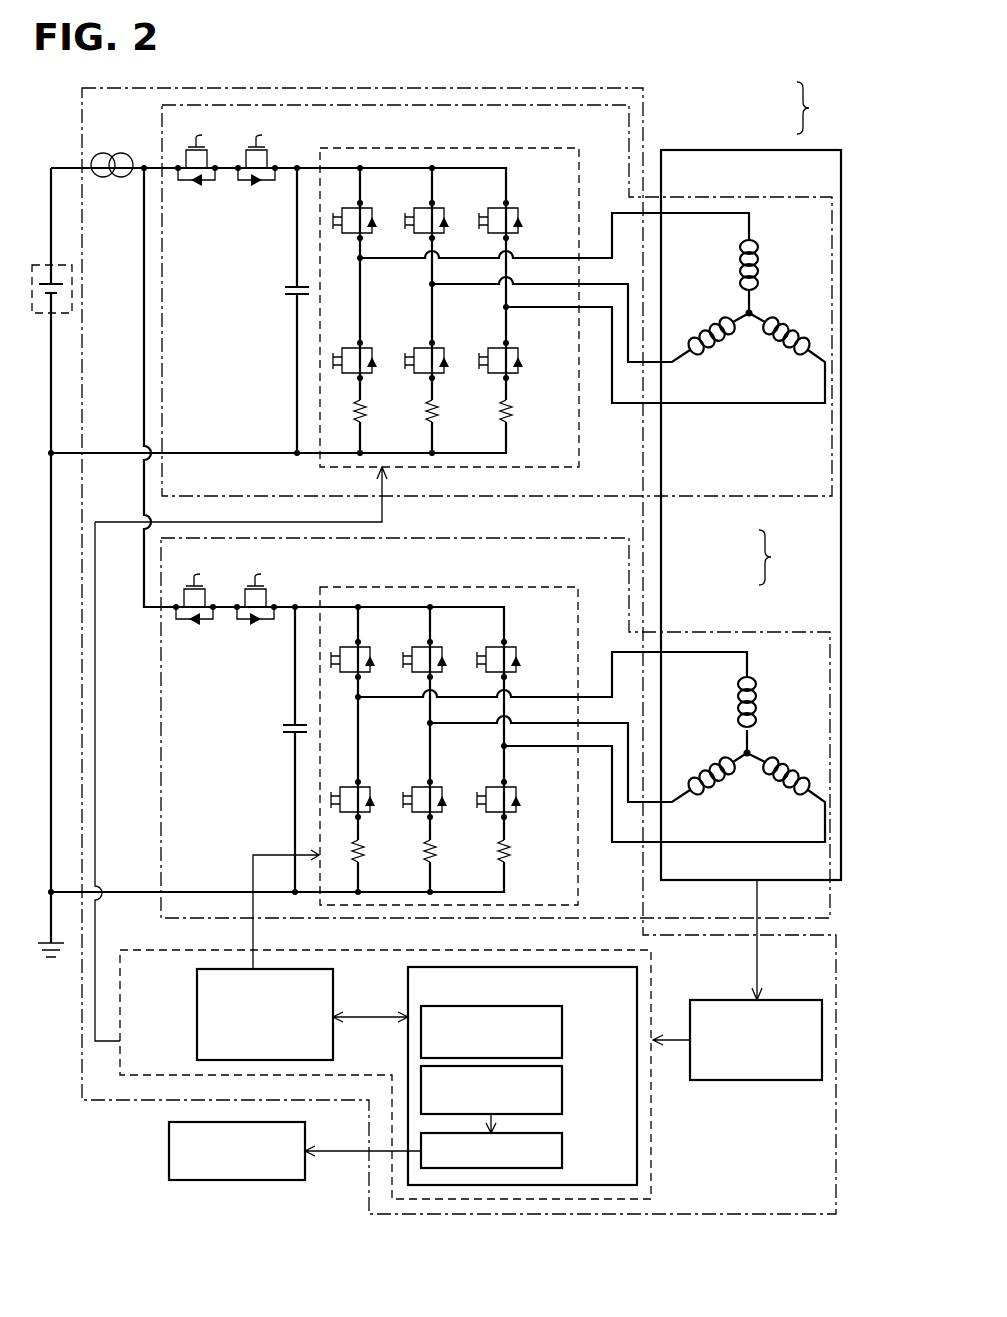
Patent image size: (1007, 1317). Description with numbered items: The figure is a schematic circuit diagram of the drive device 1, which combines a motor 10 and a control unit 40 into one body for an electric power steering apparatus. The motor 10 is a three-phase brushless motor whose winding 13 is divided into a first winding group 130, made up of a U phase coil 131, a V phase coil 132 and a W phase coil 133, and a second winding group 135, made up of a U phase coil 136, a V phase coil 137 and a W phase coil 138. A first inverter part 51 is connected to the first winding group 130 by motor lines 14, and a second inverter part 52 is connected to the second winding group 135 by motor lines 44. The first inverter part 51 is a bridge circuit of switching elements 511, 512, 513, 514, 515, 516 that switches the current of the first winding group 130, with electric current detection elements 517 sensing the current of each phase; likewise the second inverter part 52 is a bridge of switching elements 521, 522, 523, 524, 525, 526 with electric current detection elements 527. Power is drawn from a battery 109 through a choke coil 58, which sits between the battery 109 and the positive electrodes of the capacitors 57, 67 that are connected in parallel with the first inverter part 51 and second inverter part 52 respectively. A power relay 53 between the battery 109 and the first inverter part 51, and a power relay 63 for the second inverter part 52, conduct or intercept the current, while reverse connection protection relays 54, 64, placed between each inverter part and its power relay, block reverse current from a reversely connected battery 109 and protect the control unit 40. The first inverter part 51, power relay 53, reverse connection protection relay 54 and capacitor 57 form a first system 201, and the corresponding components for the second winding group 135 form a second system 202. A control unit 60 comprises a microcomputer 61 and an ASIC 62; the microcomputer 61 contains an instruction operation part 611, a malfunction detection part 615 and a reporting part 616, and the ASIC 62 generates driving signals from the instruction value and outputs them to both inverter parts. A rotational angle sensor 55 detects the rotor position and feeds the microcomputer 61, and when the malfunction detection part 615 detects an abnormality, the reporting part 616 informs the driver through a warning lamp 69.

The drive device 1 is at (812, 108).
The motor 10 is at (747, 150).
The winding 13 is at (781, 557).
The motor lines 14 is at (632, 364).
The control unit 40 is at (643, 115).
The motor lines 44 is at (632, 806).
The first inverter part 51 is at (476, 148).
The second inverter part 52 is at (476, 587).
The power relay 53 is at (183, 184).
The reverse connection protection relay 54 is at (243, 184).
The rotational angle sensor 55 is at (783, 1000).
The capacitor 57 is at (286, 297).
The choke coil 58 is at (118, 185).
The control unit 60 is at (651, 1178).
The microcomputer 61 is at (408, 990).
The ASIC 62 is at (197, 995).
The power relay 63 is at (181, 623).
The reverse connection protection relay 64 is at (242, 623).
The capacitor 67 is at (284, 733).
The warning lamp 69 is at (169, 1140).
The battery 109 is at (48, 315).
The first winding group 130 is at (709, 372).
The U phase coil 131 is at (757, 250).
The V phase coil 132 is at (705, 333).
The W phase coil 133 is at (792, 330).
The second winding group 135 is at (746, 664).
The U phase coil 136 is at (757, 686).
The V phase coil 137 is at (705, 773).
The W phase coil 138 is at (790, 770).
The first system 201 is at (162, 113).
The second system 202 is at (161, 636).
The switching element 511 is at (368, 204).
The switching element 512 is at (440, 204).
The switching element 513 is at (514, 204).
The switching element 514 is at (368, 344).
The switching element 515 is at (440, 344).
The switching element 516 is at (514, 344).
The electric current detection element 517 is at (529, 428).
The switching element 521 is at (366, 643).
The switching element 522 is at (438, 643).
The switching element 523 is at (512, 643).
The switching element 524 is at (366, 783).
The switching element 525 is at (438, 783).
The switching element 526 is at (512, 783).
The electric current detection element 527 is at (527, 868).
The instruction operation part 611 is at (562, 1022).
The malfunction detection part 615 is at (562, 1082).
The reporting part 616 is at (562, 1149).